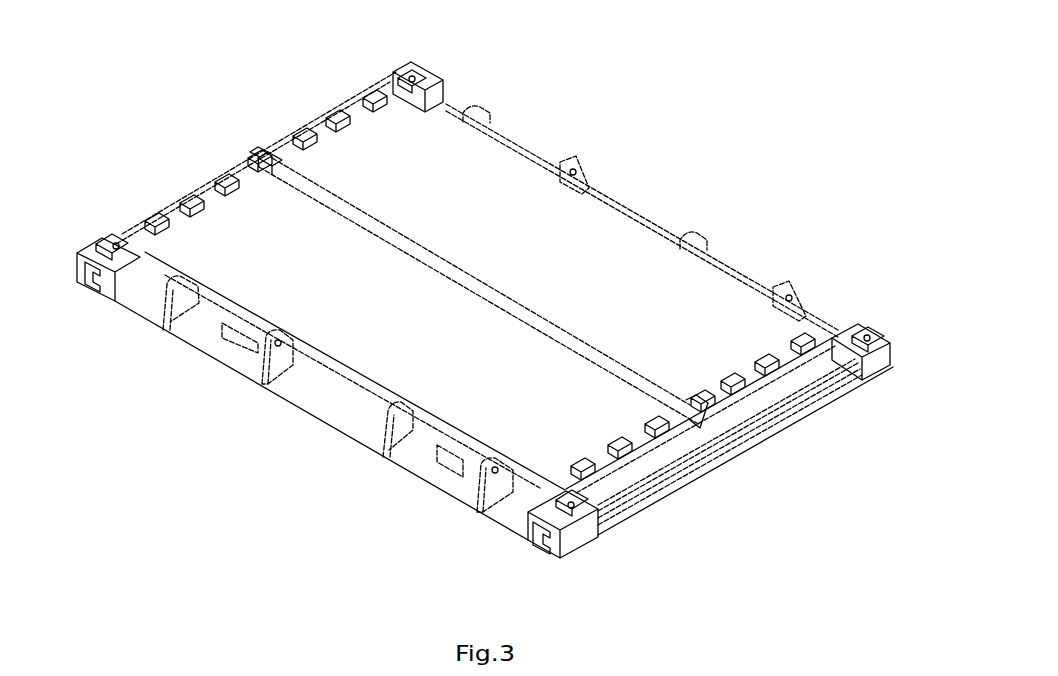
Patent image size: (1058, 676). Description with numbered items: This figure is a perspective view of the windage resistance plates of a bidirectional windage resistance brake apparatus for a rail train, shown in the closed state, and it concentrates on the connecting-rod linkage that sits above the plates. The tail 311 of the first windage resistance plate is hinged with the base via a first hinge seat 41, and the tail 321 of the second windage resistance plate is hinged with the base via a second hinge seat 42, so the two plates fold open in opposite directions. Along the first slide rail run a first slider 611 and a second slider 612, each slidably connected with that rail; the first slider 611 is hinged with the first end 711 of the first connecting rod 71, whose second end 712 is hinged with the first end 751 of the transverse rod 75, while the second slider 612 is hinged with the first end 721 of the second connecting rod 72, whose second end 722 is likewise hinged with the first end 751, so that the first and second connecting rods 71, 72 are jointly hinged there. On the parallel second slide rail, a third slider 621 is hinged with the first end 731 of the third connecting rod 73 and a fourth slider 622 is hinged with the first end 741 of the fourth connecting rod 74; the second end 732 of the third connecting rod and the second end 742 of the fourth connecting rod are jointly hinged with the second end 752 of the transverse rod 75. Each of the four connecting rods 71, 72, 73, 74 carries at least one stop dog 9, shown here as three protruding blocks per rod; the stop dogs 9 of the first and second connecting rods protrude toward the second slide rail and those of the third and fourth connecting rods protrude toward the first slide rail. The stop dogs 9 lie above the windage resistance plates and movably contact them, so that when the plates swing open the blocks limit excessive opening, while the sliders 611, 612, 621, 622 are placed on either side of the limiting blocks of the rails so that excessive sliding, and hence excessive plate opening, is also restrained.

The stop dog 9 is at (593, 465).
The first hinge seat 41 is at (280, 353).
The second hinge seat 42 is at (583, 180).
The first connecting rod 71 is at (587, 497).
The first end of first connecting rod 711 is at (572, 503).
The second end of first connecting rod 712 is at (710, 455).
The second connecting rod 72 is at (847, 368).
The first end of second connecting rod 721 is at (868, 339).
The second end of second connecting rod 722 is at (743, 415).
The third connecting rod 73 is at (137, 230).
The first end of third connecting rod 731 is at (246, 166).
The second end of third connecting rod 732 is at (233, 168).
The fourth connecting rod 74 is at (378, 83).
The first end of fourth connecting rod 741 is at (412, 81).
The second end of fourth connecting rod 742 is at (275, 142).
The transverse rod 75 is at (275, 170).
The first end of transverse rod 751 is at (697, 411).
The second end of transverse rod 752 is at (270, 163).
The tail of first windage resistance plate 311 is at (230, 295).
The tail of second windage resistance plate 321 is at (490, 145).
The first slider 611 is at (550, 535).
The second slider 612 is at (850, 340).
The third slider 621 is at (123, 270).
The fourth slider 622 is at (427, 80).